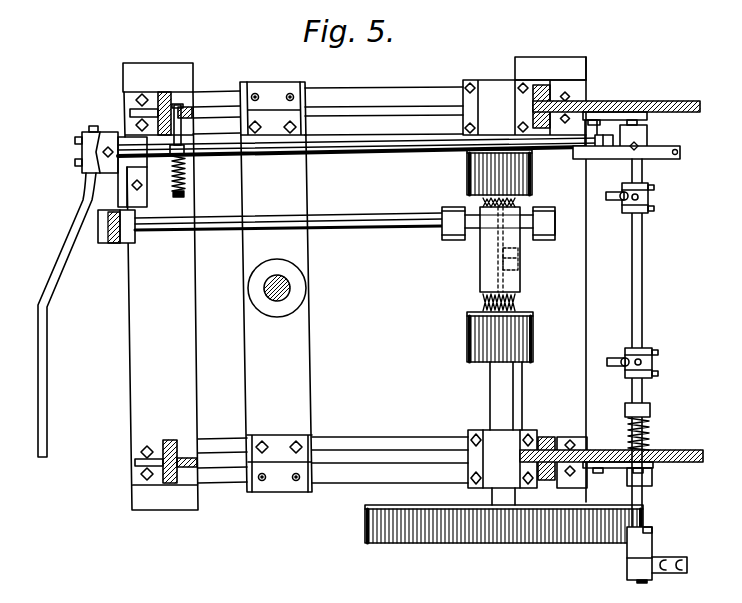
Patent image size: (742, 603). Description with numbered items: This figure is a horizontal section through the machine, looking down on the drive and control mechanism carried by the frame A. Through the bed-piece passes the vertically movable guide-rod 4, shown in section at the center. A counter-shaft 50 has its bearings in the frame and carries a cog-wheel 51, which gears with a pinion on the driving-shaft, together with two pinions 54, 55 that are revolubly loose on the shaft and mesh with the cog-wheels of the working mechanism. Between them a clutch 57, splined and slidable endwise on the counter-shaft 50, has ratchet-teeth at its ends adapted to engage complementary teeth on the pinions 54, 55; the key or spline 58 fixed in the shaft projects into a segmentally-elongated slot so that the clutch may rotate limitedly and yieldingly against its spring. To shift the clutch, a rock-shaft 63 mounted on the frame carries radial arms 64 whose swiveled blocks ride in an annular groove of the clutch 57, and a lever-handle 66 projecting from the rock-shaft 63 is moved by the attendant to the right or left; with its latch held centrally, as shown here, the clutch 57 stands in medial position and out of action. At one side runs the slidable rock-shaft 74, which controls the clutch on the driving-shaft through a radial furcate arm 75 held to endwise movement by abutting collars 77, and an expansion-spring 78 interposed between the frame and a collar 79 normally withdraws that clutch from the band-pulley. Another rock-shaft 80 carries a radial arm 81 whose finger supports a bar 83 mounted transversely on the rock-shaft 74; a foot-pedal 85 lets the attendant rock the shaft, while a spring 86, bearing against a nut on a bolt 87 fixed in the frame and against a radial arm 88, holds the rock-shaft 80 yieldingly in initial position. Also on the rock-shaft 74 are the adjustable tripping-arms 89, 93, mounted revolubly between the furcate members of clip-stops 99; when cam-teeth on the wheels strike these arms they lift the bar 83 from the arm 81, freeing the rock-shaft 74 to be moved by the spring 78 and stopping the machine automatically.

The frame A is at (362, 88).
The guide-rod 4 is at (278, 301).
The counter-shaft 50 is at (492, 392).
The cog-wheel 51 is at (485, 544).
The pinion 54 is at (533, 333).
The pinion 55 is at (533, 168).
The clutch 57 is at (483, 268).
The key or spline 58 is at (518, 263).
The rock-shaft 63 is at (349, 232).
The radial arms 64 is at (453, 242).
The lever-handle 66 is at (115, 246).
The rock-shaft 74 is at (642, 311).
The radial furcate arm 75 is at (677, 574).
The abutting collars 77 is at (648, 530).
The coiled-wire expansion-spring 78 is at (650, 432).
The collar 79 is at (650, 410).
The rock-shaft 80 is at (357, 150).
The radial arm 81 is at (604, 134).
The bar 83 is at (660, 160).
The foot-pedal 85 is at (44, 350).
The spring 86 is at (184, 175).
The bolt 87 is at (183, 127).
The radial arm 88 is at (184, 148).
The tripping-arm 89 is at (623, 368).
The tripping-arm 93 is at (620, 202).
The clip-stops 99 is at (643, 208).